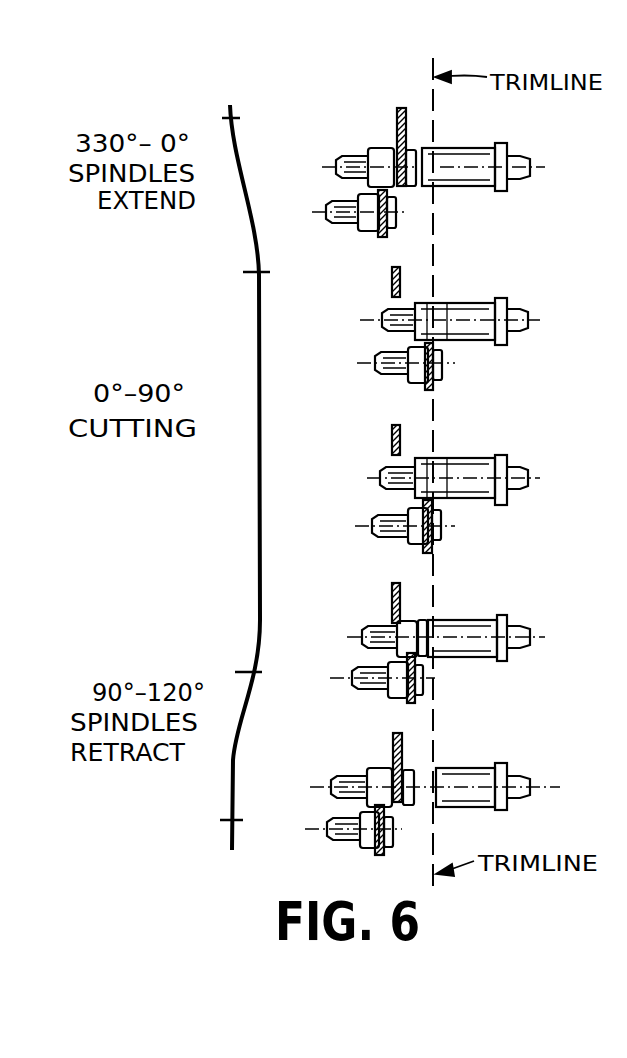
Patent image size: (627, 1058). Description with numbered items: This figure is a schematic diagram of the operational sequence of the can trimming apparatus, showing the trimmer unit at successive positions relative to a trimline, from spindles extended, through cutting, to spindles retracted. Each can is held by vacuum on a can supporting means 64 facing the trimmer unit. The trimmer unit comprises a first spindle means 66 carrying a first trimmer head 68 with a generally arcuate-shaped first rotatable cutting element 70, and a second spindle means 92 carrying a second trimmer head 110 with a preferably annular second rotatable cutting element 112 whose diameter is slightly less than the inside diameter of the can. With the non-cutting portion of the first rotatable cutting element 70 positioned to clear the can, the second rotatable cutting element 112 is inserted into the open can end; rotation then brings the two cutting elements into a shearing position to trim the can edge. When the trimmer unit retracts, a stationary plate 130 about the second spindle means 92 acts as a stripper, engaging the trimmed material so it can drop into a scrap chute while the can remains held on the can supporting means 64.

The can supporting means 64 is at (527, 165).
The first spindle means 66 is at (342, 160).
The first trimmer head 68 is at (397, 217).
The first rotatable cutting element 70 is at (381, 235).
The second spindle means 92 is at (342, 225).
The second trimmer head 110 is at (405, 152).
The second rotatable cutting element 112 is at (392, 147).
The stationary plate 130 is at (401, 109).